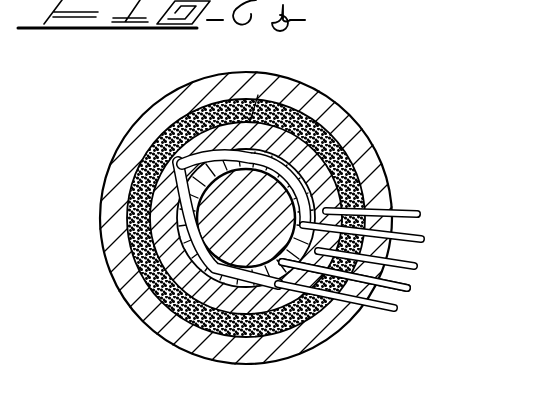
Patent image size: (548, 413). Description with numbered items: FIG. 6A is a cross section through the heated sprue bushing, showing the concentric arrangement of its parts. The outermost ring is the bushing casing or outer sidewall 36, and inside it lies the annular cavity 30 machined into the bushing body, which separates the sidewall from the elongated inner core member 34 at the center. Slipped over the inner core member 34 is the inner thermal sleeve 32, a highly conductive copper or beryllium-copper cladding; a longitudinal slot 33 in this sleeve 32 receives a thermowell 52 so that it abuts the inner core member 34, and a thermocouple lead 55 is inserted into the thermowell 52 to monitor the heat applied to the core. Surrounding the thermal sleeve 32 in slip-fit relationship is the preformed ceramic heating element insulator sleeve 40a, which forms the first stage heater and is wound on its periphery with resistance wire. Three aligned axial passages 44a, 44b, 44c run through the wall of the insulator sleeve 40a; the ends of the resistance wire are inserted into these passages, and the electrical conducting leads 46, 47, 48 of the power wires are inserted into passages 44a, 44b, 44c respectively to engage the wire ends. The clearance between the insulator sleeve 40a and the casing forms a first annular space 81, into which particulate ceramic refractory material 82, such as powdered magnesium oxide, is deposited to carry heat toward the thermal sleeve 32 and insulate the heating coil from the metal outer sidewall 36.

The annular cavity 30 is at (148, 280).
The inner thermal sleeve 32 is at (152, 156).
The slot 33 is at (338, 178).
The inner core member 34 is at (182, 211).
The outer sidewall 36 is at (147, 122).
The first preformed heating element insulator sleeve 40a is at (258, 95).
The first passage 44a is at (280, 308).
The center passage 44b is at (309, 300).
The third passage 44c is at (355, 196).
The first conducting lead 46 is at (395, 308).
The second conducting lead 47 is at (415, 266).
The conducting lead 48 is at (420, 213).
The thermowell 52 is at (283, 238).
The thermocouple lead 55 is at (422, 239).
The first annular space 81 is at (302, 125).
The particulate ceramic refractory material 82 is at (329, 146).